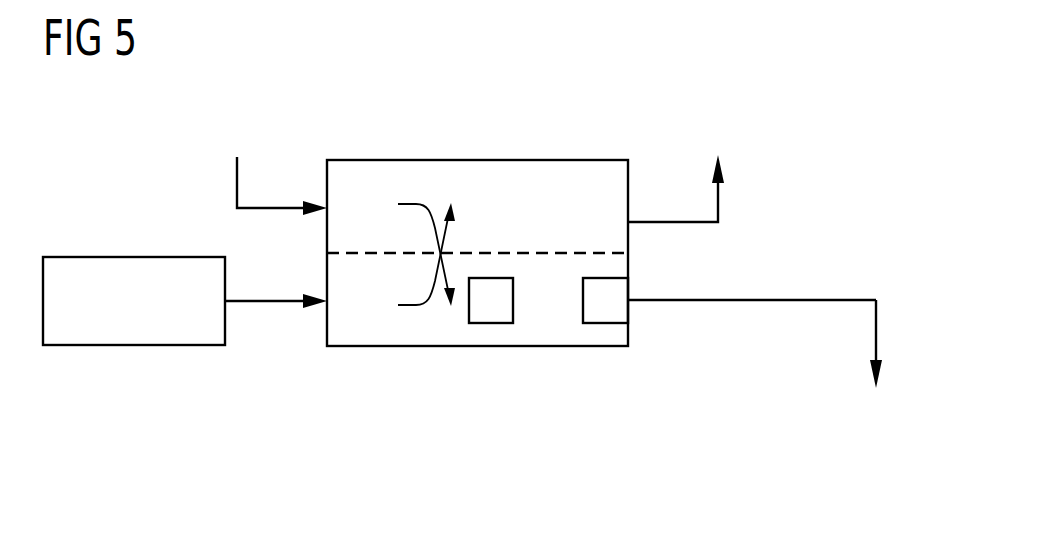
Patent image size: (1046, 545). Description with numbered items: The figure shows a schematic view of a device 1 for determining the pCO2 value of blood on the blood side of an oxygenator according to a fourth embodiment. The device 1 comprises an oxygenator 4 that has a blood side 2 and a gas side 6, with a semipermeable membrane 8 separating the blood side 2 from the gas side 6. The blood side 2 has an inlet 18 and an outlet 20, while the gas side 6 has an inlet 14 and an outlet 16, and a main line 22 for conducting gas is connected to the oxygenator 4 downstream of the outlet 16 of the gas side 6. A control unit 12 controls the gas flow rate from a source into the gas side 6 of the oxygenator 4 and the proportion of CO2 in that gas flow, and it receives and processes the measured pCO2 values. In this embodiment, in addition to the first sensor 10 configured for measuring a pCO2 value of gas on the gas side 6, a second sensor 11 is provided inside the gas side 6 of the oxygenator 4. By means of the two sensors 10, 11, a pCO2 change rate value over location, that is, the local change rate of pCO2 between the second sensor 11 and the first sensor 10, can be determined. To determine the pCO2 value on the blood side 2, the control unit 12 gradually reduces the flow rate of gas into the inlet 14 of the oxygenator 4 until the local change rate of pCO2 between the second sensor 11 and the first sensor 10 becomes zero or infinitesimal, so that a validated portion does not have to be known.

The device 1 is at (556, 86).
The blood side 2 is at (477, 165).
The oxygenator 4 is at (375, 160).
The gas side 6 is at (417, 337).
The semipermeable membrane 8 is at (528, 253).
The sensor 10 is at (613, 310).
The second sensor 11 is at (492, 312).
The control unit 12 is at (134, 257).
The inlet 14 is at (320, 306).
The outlet 16 is at (630, 298).
The inlet 18 is at (320, 203).
The outlet 20 is at (628, 205).
The main line 22 is at (787, 300).